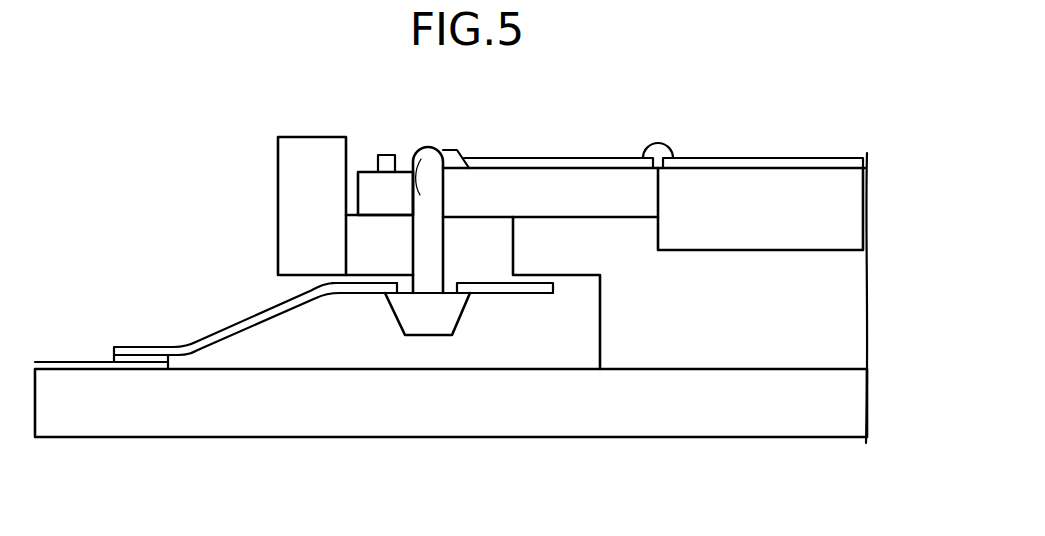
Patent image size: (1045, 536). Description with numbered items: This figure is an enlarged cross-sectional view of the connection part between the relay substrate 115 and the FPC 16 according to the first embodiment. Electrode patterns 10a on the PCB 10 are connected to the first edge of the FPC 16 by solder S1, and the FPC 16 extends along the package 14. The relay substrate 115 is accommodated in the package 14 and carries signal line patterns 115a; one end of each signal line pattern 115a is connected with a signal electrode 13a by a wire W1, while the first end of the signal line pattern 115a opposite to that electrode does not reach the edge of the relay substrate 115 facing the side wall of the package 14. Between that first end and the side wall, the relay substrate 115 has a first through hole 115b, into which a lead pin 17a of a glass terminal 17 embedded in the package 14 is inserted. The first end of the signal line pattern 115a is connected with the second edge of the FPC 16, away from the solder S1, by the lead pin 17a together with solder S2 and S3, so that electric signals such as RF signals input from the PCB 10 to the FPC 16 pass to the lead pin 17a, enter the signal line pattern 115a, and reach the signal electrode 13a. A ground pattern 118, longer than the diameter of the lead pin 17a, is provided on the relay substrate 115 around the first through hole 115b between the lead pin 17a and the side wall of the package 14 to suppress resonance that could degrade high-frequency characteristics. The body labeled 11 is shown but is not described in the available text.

The PCB 10 is at (105, 423).
The electrode patterns 10a is at (77, 362).
The solder S1 is at (147, 357).
The FPC 16 is at (250, 318).
The package 14 is at (297, 190).
The glass terminal 17 is at (363, 247).
The lead pin 17a is at (420, 157).
The ground pattern 118 is at (412, 163).
The relay substrate 115 is at (368, 188).
The signal line pattern 115a is at (585, 165).
The first through hole 115b is at (382, 153).
The solder S3 is at (452, 148).
The wire W1 is at (658, 143).
The signal electrode 13a is at (762, 163).
The semiconductor chip 11 is at (817, 190).
The solder S2 is at (413, 327).